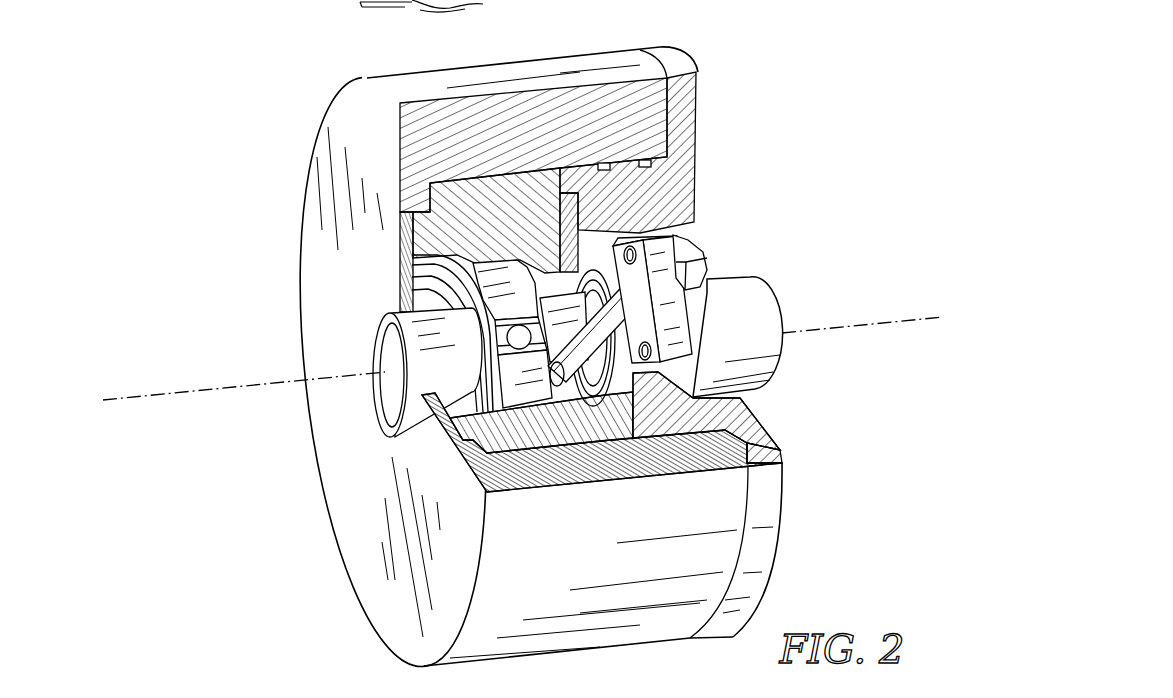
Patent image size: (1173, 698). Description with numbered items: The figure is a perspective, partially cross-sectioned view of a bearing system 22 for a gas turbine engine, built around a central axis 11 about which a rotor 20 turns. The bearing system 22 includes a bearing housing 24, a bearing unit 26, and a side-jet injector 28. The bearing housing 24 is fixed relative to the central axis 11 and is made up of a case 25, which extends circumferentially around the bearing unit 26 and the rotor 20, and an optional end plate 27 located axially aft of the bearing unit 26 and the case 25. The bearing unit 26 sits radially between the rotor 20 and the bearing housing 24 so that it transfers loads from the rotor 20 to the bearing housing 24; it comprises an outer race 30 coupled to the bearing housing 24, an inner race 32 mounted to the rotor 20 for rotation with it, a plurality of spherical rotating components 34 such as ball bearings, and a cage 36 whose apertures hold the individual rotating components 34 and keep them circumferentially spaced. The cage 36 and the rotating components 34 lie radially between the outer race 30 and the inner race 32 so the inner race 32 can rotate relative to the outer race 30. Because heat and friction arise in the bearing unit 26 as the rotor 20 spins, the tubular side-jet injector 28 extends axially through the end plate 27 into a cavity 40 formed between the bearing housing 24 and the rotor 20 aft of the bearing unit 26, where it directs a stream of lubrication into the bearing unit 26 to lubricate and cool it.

The central axis 11 is at (898, 318).
The rotor 20 is at (757, 282).
The bearing system 22 is at (240, 137).
The bearing housing 24 is at (568, 53).
The case 25 is at (450, 218).
The bearing unit 26 is at (493, 255).
The end plate 27 is at (702, 118).
The side-jet injector 28 is at (710, 248).
The outer race 30 is at (438, 271).
The inner race 32 is at (450, 304).
The rotating components 34 is at (490, 343).
The cage 36 is at (440, 286).
The cavity 40 is at (547, 278).